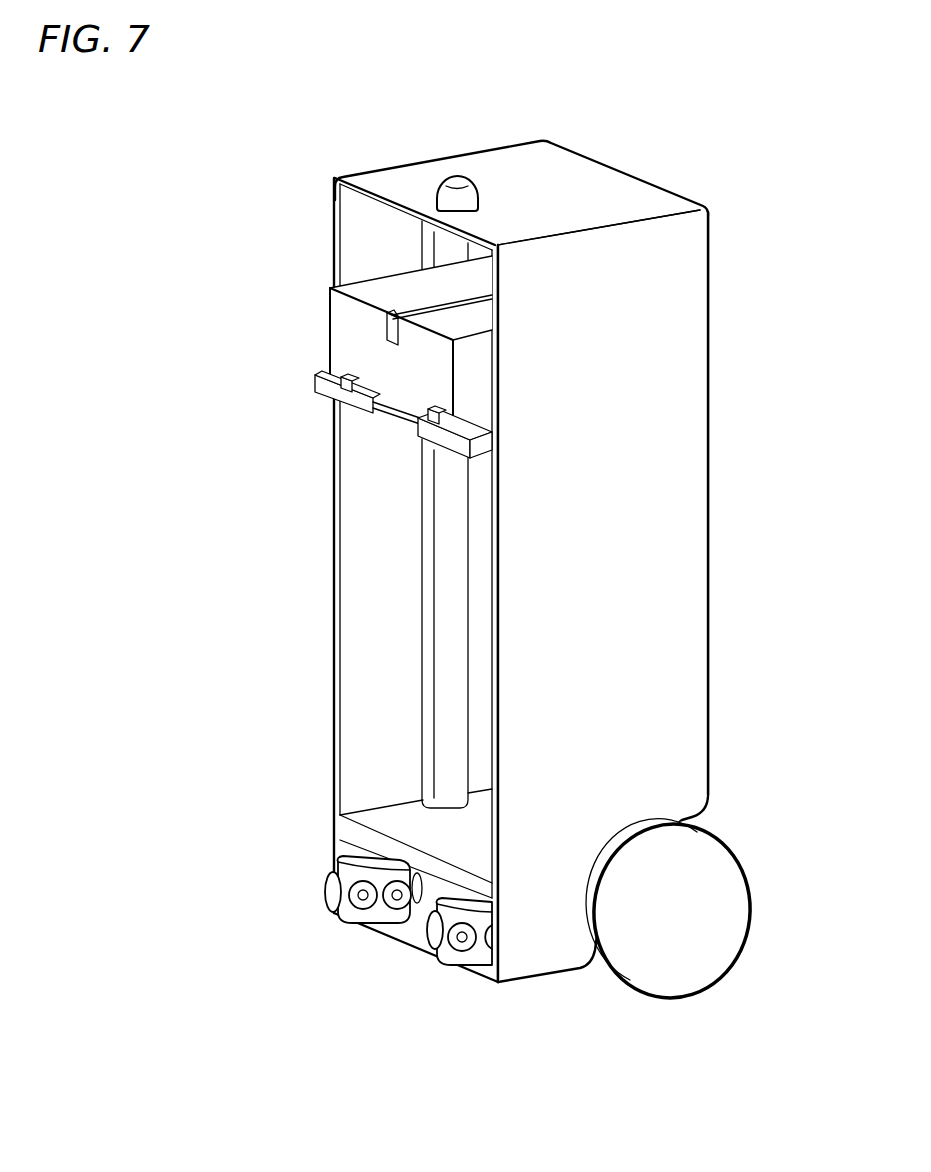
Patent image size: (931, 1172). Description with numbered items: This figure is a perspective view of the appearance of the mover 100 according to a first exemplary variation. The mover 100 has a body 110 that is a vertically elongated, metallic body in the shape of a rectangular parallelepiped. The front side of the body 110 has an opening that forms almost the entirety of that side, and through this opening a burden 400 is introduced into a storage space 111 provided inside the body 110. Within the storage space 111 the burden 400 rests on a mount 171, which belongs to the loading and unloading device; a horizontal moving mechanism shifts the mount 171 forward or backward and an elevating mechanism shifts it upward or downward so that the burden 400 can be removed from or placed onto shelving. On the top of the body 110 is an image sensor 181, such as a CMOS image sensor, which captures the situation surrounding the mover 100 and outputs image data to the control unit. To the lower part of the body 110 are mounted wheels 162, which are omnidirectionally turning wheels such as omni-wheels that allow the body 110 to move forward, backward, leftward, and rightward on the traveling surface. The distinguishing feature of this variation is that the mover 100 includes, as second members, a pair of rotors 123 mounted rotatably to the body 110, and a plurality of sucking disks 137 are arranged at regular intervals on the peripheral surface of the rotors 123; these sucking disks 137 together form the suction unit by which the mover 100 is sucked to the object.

The mover 100 is at (638, 166).
The body 110 is at (660, 437).
The storage space 111 is at (383, 615).
The image sensor 181 is at (478, 193).
The burden 400 is at (352, 337).
The mount 171 is at (327, 390).
The rotor 123 is at (438, 957).
The sucking disk 137 is at (325, 893).
The wheel 162 is at (693, 927).